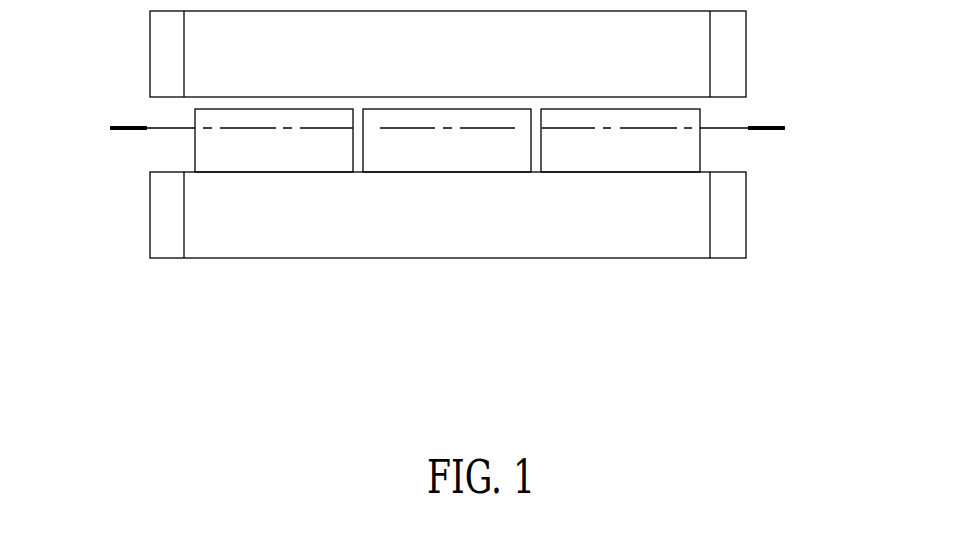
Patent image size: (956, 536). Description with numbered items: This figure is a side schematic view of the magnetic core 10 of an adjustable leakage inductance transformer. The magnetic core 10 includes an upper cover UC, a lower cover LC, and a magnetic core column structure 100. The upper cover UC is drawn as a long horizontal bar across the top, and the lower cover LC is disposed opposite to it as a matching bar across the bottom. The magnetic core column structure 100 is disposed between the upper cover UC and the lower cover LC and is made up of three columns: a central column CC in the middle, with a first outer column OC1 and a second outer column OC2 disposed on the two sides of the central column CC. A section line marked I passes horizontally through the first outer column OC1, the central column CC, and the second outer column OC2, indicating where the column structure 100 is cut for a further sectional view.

The magnetic core 10 is at (434, 203).
The upper cover UC is at (150, 46).
The lower cover LC is at (150, 213).
The magnetic core column structure 100 is at (448, 215).
The first outer column OC1 is at (195, 154).
The central column CC is at (440, 109).
The second outer column OC2 is at (700, 151).
The section line I is at (134, 118).